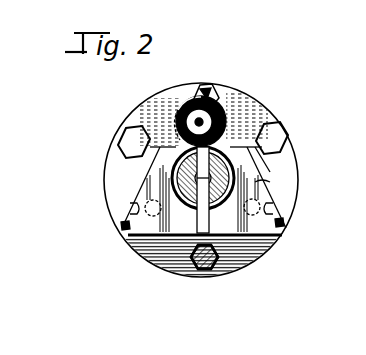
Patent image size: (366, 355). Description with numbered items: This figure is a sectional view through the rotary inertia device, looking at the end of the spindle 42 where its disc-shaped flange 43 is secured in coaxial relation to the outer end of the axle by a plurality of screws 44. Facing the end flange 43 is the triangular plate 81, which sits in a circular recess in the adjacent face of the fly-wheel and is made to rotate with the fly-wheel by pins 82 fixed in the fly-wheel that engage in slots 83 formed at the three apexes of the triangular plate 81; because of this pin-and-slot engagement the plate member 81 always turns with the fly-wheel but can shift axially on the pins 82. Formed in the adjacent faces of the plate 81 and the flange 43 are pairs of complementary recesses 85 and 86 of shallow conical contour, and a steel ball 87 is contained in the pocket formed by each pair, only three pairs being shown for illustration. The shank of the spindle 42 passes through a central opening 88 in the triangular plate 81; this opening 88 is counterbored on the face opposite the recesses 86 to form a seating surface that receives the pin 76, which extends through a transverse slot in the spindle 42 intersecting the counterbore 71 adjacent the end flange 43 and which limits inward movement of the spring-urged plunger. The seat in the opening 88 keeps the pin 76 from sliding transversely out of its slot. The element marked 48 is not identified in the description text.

The spindle 42 is at (188, 209).
The disc-shaped flange 43 is at (260, 88).
The screws 44 is at (123, 138).
The hexagonal nut 48 is at (207, 270).
The counterbore 71 is at (236, 172).
The pin 76 is at (144, 164).
The triangular plate 81 is at (237, 177).
The pins 82 is at (211, 95).
The slots 83 is at (197, 100).
The recesses 85 is at (222, 112).
The recesses 86 is at (189, 110).
The steel ball 87 is at (181, 113).
The central opening 88 is at (222, 151).